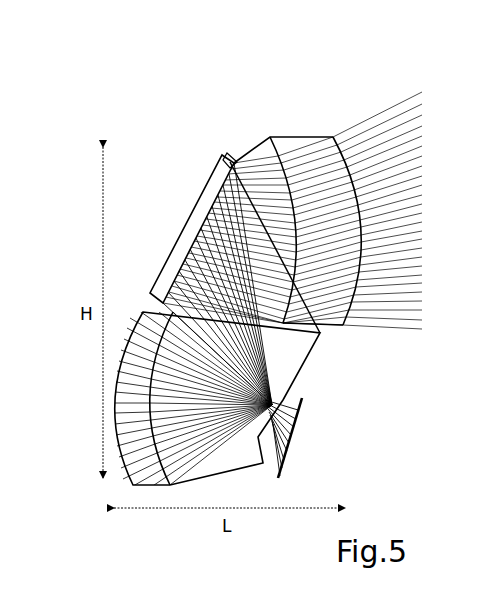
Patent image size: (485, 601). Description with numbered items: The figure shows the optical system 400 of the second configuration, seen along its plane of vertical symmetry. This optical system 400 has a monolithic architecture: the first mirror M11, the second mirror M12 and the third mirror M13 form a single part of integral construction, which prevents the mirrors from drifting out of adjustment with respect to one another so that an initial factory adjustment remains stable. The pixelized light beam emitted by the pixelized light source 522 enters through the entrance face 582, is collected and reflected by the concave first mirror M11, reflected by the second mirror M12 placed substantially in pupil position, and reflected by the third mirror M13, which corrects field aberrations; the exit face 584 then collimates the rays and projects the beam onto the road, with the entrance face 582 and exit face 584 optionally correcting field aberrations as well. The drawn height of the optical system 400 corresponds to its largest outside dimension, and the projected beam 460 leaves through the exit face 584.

The optical system 400 is at (221, 96).
The first mirror M11 is at (30, 0).
The second mirror M12 is at (320, 333).
The third mirror M13 is at (222, 158).
The exit face 584 is at (292, 138).
The exit light beam 460 is at (348, 80).
The pixelized light source 522 is at (287, 467).
The entrance face 582 is at (258, 476).